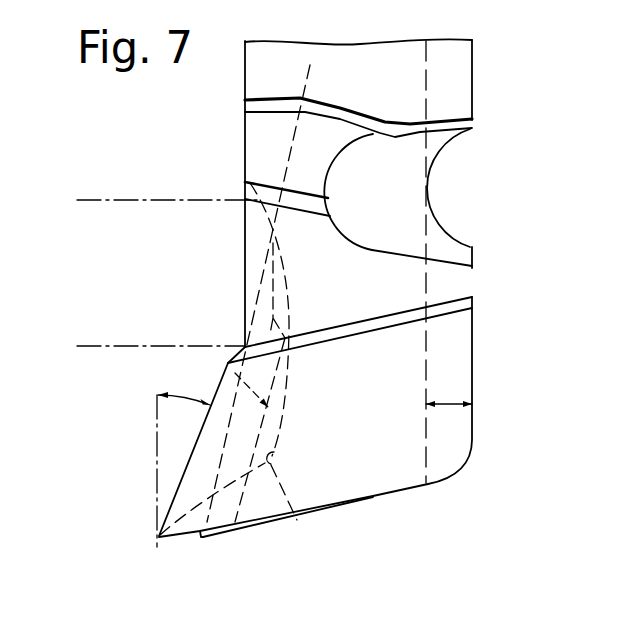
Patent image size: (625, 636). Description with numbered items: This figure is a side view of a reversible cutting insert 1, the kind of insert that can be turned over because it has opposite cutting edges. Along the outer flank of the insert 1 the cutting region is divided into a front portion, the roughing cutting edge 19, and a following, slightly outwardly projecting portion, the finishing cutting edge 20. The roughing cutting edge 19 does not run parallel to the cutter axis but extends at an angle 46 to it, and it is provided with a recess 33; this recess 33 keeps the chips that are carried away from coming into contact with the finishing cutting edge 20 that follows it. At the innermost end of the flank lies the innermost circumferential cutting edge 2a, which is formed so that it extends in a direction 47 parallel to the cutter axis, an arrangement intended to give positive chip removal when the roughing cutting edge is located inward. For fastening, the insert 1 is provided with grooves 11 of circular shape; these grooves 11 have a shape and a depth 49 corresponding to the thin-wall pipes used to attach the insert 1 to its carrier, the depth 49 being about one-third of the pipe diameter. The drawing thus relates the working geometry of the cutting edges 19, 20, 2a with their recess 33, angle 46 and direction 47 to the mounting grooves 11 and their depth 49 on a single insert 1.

The insert 1 is at (258, 140).
The innermost circumferential cutting edge 2a is at (203, 537).
The grooves 11 is at (430, 184).
The roughing cutting edge 19 is at (190, 458).
The finishing cutting edge 20 is at (84, 200).
The recess 33 is at (227, 360).
The angle 46 is at (201, 400).
The direction 47 is at (245, 67).
The depth 49 is at (447, 406).